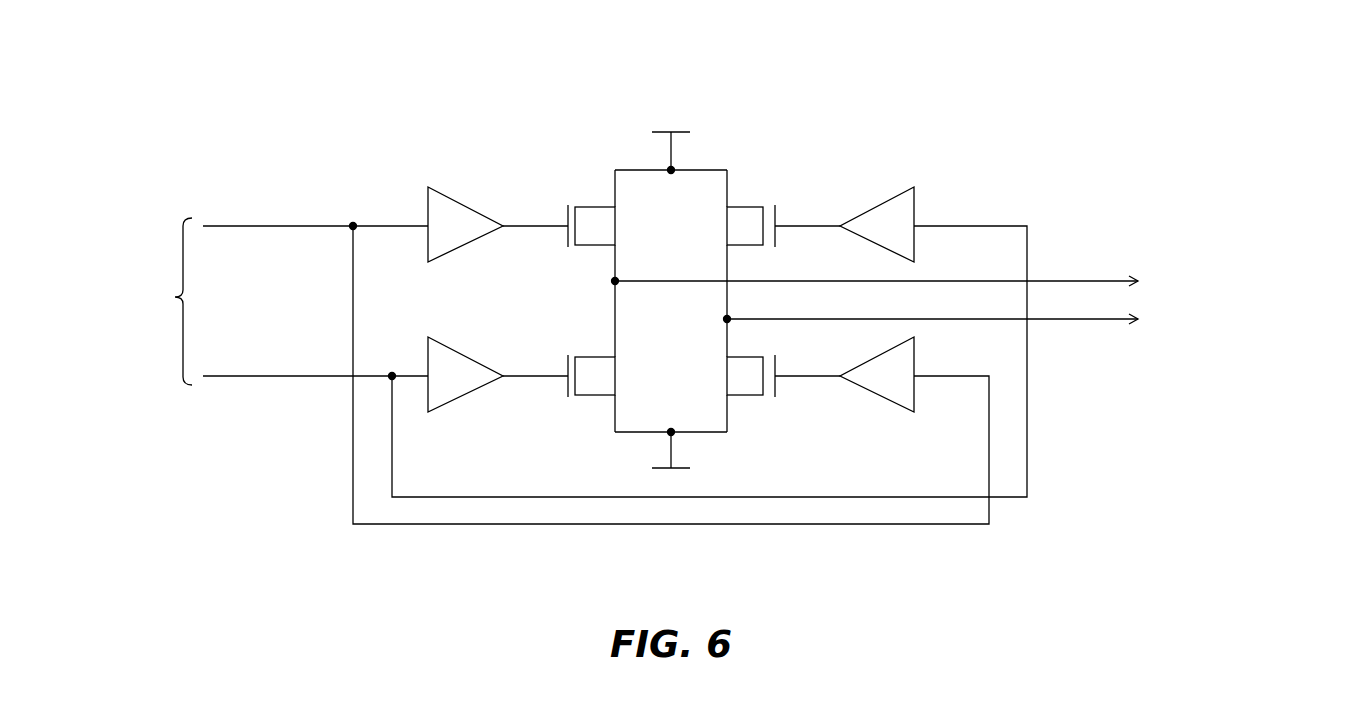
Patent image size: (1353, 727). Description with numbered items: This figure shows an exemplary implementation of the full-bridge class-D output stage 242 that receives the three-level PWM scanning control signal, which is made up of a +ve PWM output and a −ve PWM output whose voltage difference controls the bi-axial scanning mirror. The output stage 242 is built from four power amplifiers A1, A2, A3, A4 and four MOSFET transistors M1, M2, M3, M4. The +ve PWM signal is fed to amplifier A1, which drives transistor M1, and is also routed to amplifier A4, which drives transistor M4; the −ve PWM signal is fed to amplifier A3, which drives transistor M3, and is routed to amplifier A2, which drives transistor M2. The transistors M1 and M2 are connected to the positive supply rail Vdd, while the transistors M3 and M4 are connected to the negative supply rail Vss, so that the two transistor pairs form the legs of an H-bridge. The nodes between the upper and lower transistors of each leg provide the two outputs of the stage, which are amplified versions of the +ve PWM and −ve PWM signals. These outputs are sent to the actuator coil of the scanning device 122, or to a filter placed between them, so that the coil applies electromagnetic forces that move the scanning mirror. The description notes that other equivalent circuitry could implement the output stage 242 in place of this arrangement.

The full-bridge class-D output stage 242 is at (691, 31).
The scanning device 122 is at (1249, 302).
The MOSFET transistor M1 is at (594, 226).
The MOSFET transistor M2 is at (746, 226).
The MOSFET transistor M3 is at (594, 376).
The MOSFET transistor M4 is at (746, 376).
The power amplifier A1 is at (498, 224).
The power amplifier A2 is at (844, 224).
The power amplifier A3 is at (498, 374).
The power amplifier A4 is at (844, 374).
The positive supply Vdd is at (671, 141).
The negative supply Vss is at (671, 460).